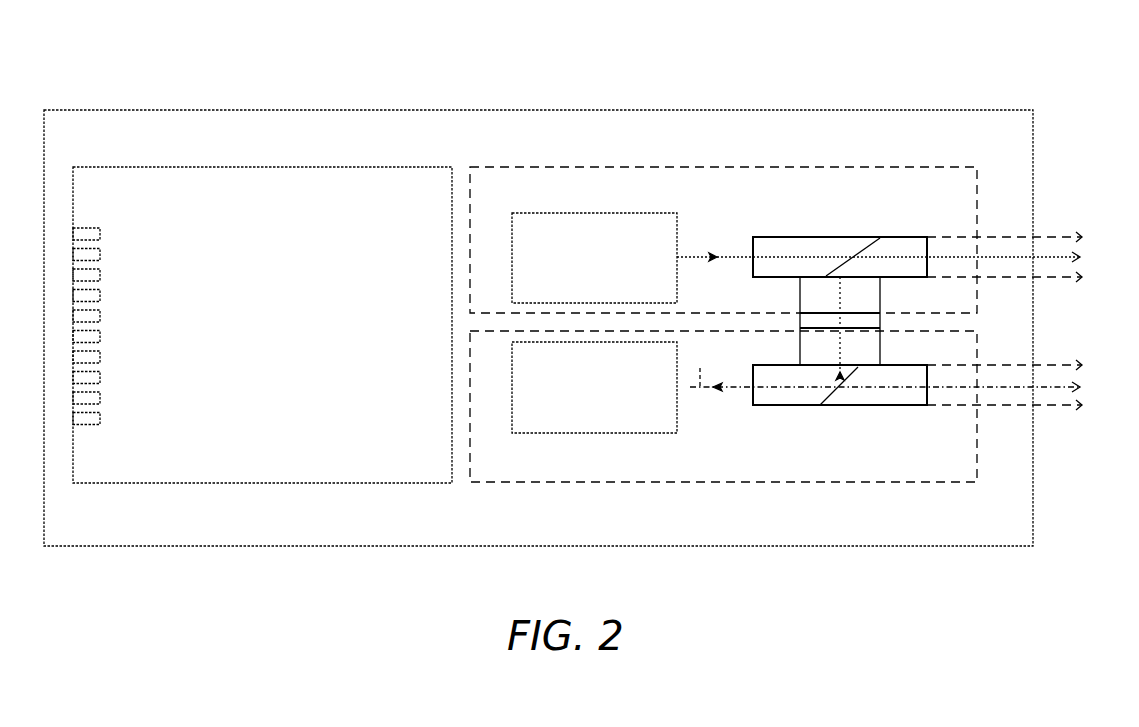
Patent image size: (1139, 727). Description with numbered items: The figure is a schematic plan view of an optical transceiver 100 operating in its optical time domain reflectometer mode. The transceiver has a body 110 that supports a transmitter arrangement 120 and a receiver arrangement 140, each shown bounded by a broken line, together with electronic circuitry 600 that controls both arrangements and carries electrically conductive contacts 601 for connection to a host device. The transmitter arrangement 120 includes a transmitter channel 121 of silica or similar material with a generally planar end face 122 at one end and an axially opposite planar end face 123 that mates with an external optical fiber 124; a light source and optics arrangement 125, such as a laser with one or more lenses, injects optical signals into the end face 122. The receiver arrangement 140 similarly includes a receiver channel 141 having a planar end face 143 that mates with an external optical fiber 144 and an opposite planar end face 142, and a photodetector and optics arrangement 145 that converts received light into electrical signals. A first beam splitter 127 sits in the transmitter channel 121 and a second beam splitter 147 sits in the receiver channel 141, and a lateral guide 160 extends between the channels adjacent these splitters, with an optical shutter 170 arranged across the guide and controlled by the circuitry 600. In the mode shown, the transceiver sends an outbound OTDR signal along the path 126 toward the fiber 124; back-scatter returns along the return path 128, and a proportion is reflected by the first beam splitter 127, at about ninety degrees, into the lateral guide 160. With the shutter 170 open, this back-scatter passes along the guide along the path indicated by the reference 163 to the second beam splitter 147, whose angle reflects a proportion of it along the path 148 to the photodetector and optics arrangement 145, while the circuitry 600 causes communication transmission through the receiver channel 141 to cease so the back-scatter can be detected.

The optical transceiver 100 is at (100, 74).
The body 110 is at (100, 546).
The electronic circuitry 600 is at (143, 167).
The electrically conductive contacts 601 is at (100, 313).
The transmitter arrangement 120 is at (462, 158).
The light source and optics arrangement 125 is at (677, 213).
The planar end face 122 is at (753, 247).
The transmitter channel 121 is at (800, 237).
The path 126 is at (812, 256).
The first beam splitter 127 is at (860, 243).
The planar end face 123 is at (930, 240).
The return path 128 is at (887, 282).
The external optical fiber 124 is at (1062, 232).
The lateral guide 160 is at (880, 346).
The optical shutter 170 is at (880, 321).
The plano-convex lens 163 is at (830, 290).
The receiver arrangement 140 is at (461, 489).
The photodetector and optics arrangement 145 is at (677, 433).
The path 148 is at (702, 366).
The receiver channel 141 is at (800, 405).
The planar end face 142 is at (753, 396).
The second beam splitter 147 is at (845, 392).
The planar end face 143 is at (928, 402).
The external optical fiber 144 is at (1062, 410).